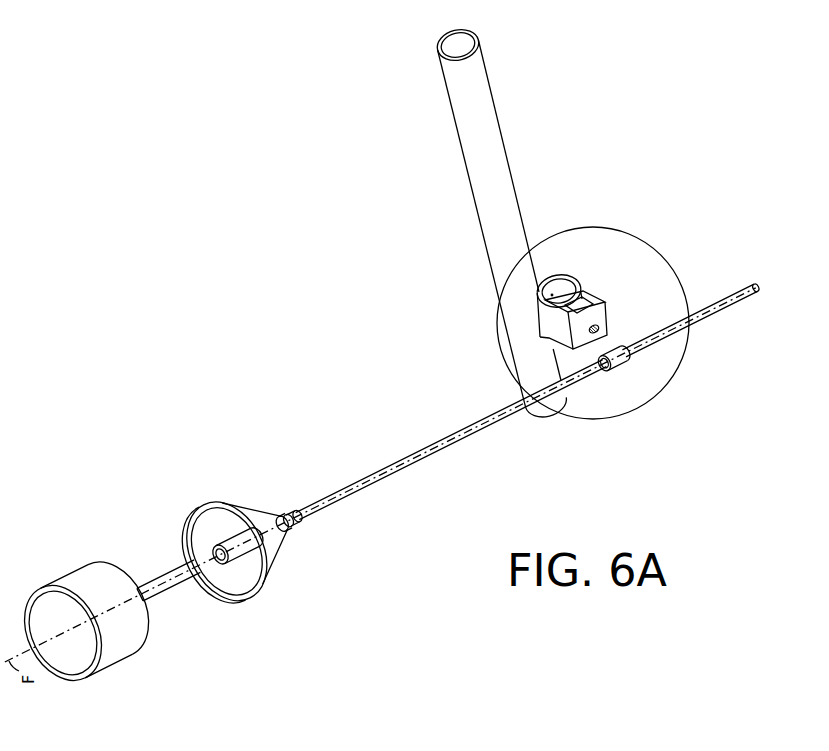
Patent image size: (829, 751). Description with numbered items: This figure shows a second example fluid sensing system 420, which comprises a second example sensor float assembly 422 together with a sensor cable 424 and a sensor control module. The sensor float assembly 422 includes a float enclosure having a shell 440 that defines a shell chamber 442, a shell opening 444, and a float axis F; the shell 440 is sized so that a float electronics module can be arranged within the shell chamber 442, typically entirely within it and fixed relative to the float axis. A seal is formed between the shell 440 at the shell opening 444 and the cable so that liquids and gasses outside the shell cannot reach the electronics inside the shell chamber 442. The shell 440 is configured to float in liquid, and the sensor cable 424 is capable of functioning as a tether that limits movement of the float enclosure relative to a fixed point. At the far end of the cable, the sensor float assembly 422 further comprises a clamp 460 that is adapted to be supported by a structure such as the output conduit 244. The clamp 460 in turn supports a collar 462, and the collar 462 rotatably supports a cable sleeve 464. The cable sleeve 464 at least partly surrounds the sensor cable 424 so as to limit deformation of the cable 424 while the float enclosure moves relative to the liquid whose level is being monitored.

The output conduit 244 is at (497, 146).
The second example fluid sensing system 420 is at (706, 176).
The second example sensor float assembly 422 is at (120, 699).
The sensor cable 424 is at (734, 301).
The shell 440 is at (231, 543).
The shell chamber 442 is at (240, 582).
The shell opening 444 is at (288, 513).
The clamp 460 is at (607, 291).
The collar 462 is at (625, 334).
The cable sleeve 464 is at (423, 450).